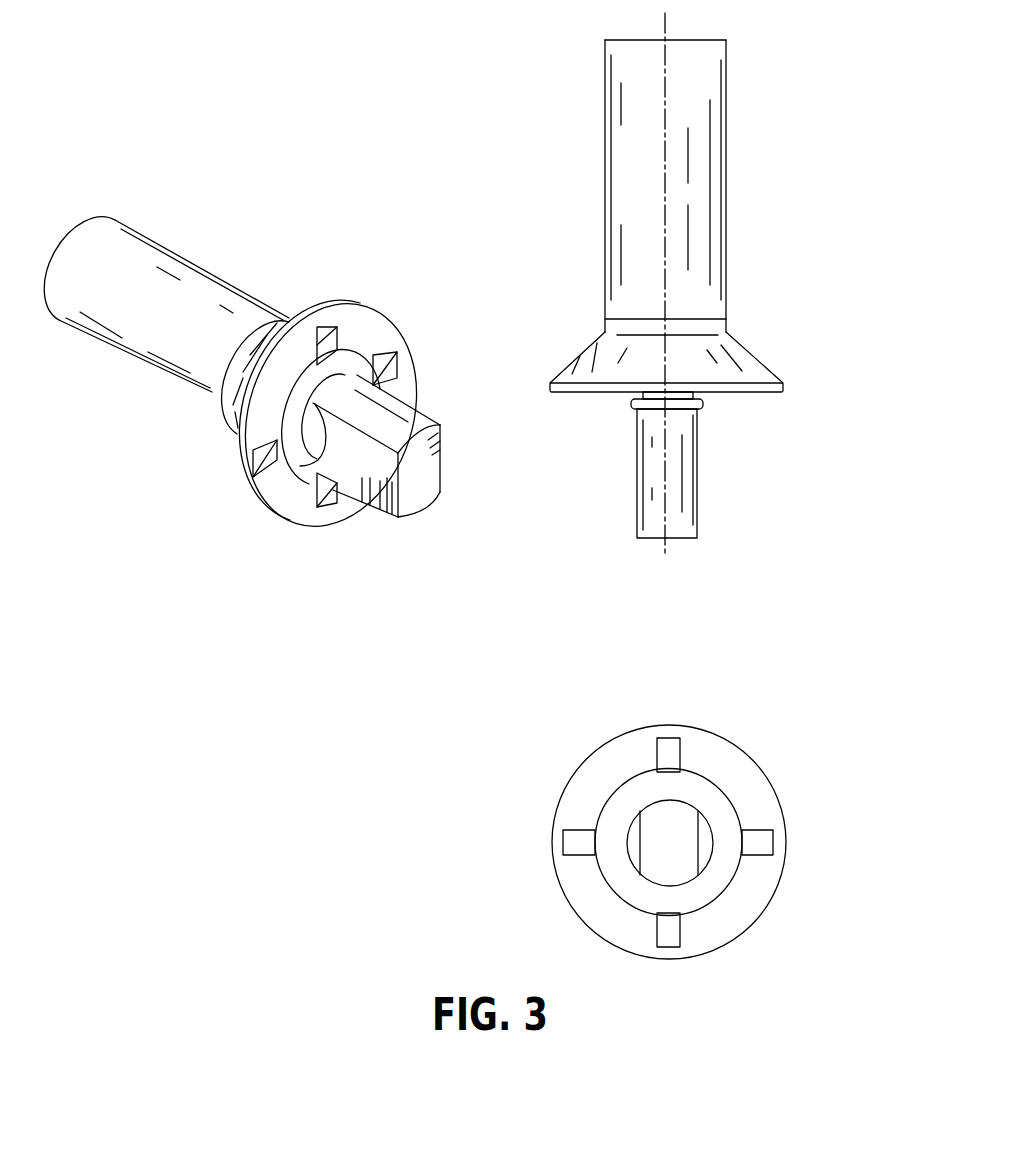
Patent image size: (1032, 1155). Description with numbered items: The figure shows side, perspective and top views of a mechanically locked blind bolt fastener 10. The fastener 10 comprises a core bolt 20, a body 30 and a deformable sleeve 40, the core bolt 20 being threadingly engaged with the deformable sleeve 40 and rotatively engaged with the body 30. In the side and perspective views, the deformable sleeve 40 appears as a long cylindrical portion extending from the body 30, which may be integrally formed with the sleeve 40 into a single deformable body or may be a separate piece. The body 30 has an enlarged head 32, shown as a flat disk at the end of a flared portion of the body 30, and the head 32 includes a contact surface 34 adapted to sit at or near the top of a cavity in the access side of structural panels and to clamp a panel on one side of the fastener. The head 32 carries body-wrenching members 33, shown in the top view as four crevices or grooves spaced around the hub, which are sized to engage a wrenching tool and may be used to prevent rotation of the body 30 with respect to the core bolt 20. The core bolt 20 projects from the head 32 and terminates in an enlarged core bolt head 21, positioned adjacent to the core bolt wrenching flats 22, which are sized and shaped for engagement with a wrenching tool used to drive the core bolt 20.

The mechanically locked blind bolt fastener 10 is at (845, 189).
The core bolt 20 is at (688, 487).
The core bolt head 21 is at (360, 367).
The core bolt wrenching flats 22 is at (370, 486).
The body 30 is at (737, 357).
The head 32 is at (768, 393).
The body-wrenching members 33 is at (322, 328).
The contact surface 34 is at (573, 376).
The deformable sleeve 40 is at (703, 75).